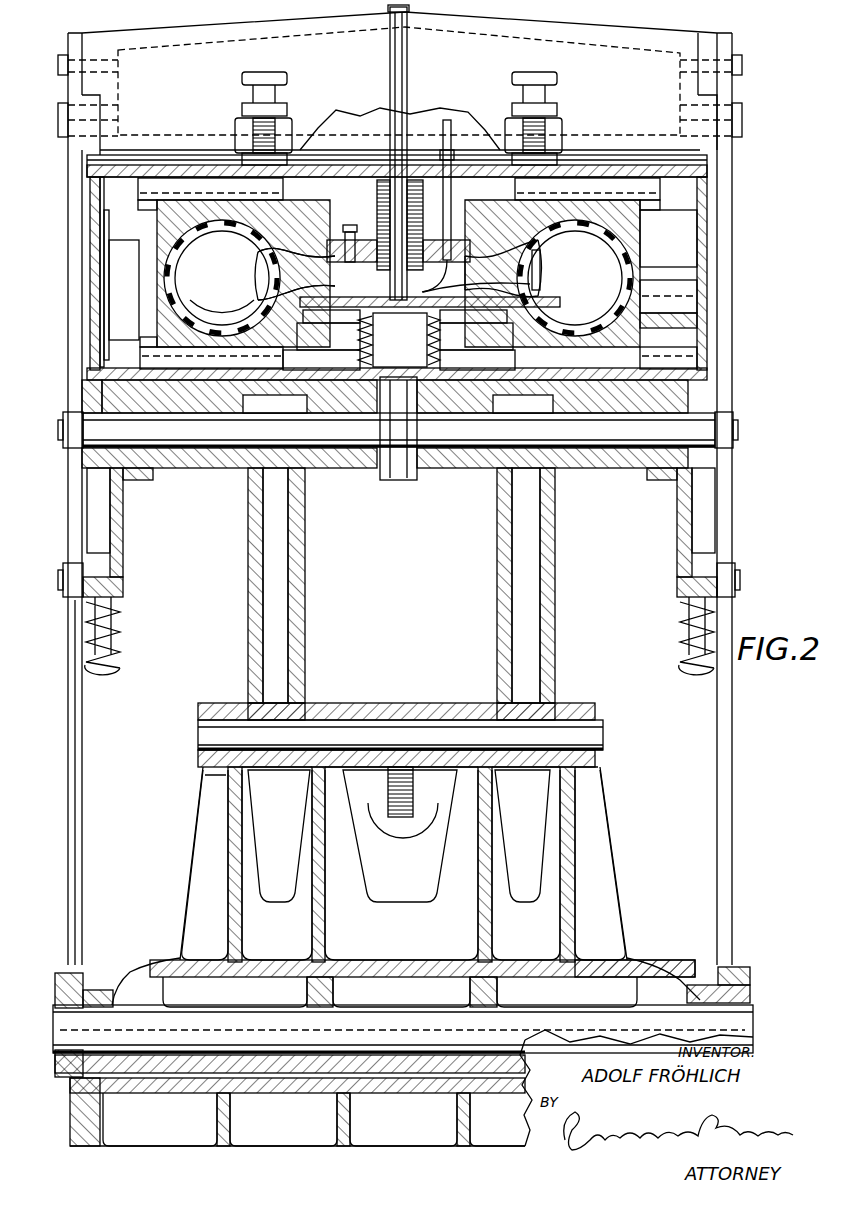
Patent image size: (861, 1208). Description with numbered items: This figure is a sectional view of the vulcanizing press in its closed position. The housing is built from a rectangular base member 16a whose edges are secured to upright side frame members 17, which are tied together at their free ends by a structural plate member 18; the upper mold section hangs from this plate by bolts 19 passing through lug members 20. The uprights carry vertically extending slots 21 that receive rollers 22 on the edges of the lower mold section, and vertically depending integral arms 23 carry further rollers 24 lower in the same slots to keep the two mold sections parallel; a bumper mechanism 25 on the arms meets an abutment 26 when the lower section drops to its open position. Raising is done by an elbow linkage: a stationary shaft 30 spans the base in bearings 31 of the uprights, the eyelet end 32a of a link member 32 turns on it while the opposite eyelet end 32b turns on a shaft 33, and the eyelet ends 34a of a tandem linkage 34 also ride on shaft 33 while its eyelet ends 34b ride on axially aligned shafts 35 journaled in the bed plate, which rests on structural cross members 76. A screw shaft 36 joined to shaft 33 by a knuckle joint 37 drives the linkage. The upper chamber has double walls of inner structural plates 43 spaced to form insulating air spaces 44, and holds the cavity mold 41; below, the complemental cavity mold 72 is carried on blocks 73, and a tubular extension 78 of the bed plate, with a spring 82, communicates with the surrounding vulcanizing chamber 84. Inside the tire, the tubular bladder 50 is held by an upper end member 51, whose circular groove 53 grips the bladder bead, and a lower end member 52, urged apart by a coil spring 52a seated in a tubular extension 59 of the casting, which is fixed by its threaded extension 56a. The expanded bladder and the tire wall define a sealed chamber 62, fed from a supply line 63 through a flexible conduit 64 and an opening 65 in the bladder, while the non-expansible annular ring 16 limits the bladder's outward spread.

The annular ring 16 is at (64, 746).
The rectangular base member 16a is at (96, 1146).
The upright side frame member 17 is at (722, 180).
The structural plate member 18 is at (171, 40).
The bolt 19 is at (264, 72).
The lug member 20 is at (280, 125).
The vertically extending slot 21 is at (68, 641).
The roller 22 is at (68, 424).
The vertically depending integral arm 23 is at (117, 508).
The roller 24 is at (713, 557).
The bumper mechanism 25 is at (131, 631).
The abutment 26 is at (95, 990).
The stationary shaft 30 is at (80, 1022).
The bearing 31 is at (58, 986).
The link member 32 is at (600, 866).
The eyelet end 32a is at (605, 966).
The eyelet end 32b is at (590, 710).
The shaft 33 is at (596, 728).
The tandem linkage 34 is at (302, 613).
The eyelet end 34a is at (294, 702).
The eyelet end 34b is at (300, 462).
The shaft 35 is at (215, 432).
The screw shaft 36 is at (425, 805).
The knuckle joint 37 is at (405, 703).
The cavity mold 41 is at (630, 226).
The inner structural plate 43 is at (90, 248).
The air space 44 is at (97, 318).
The tubular bladder 50 is at (258, 292).
The upper end member 51 is at (300, 255).
The lower end member 52 is at (329, 282).
The coil spring 52a is at (378, 266).
The circular groove 53 is at (536, 260).
The threaded extension 56a is at (408, 120).
The tubular extension 59 is at (375, 191).
The sealed chamber 62 is at (240, 266).
The supply line 63 is at (451, 196).
The flexible conduit 64 is at (495, 282).
The opening 65 is at (540, 270).
The cavity mold 72 is at (640, 322).
The block 73 is at (652, 360).
The structural cross member 76 is at (74, 386).
The tubular extension 78 is at (358, 363).
The spring 82 is at (441, 359).
The vulcanizing chamber 84 is at (140, 334).